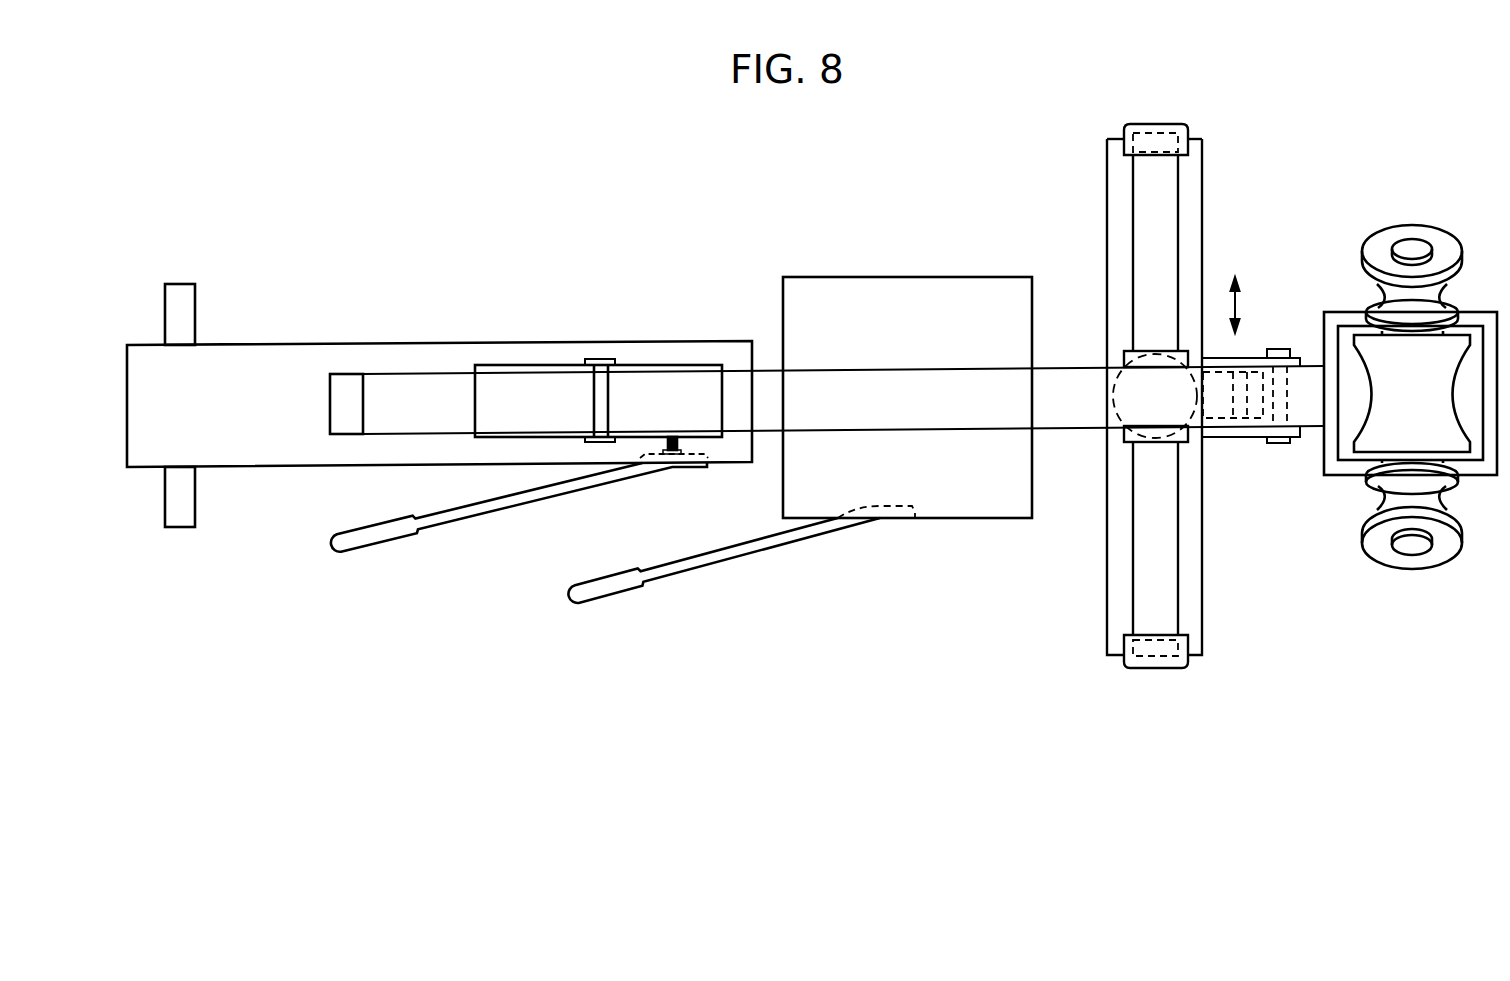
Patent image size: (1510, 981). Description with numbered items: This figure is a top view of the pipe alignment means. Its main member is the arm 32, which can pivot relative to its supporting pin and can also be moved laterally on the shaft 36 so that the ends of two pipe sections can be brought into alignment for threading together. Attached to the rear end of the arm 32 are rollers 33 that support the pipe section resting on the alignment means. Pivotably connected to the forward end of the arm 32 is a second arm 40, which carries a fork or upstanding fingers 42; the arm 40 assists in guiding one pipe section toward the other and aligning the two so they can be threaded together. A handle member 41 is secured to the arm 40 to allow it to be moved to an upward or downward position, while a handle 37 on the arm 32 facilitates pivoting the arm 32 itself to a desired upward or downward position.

The arm 32 is at (767, 380).
The rollers 33 is at (1372, 253).
The shaft 36 is at (1168, 235).
The handle 37 is at (614, 596).
The arm 40 is at (460, 343).
The handle member 41 is at (357, 548).
The upstanding fingers 42 is at (195, 320).